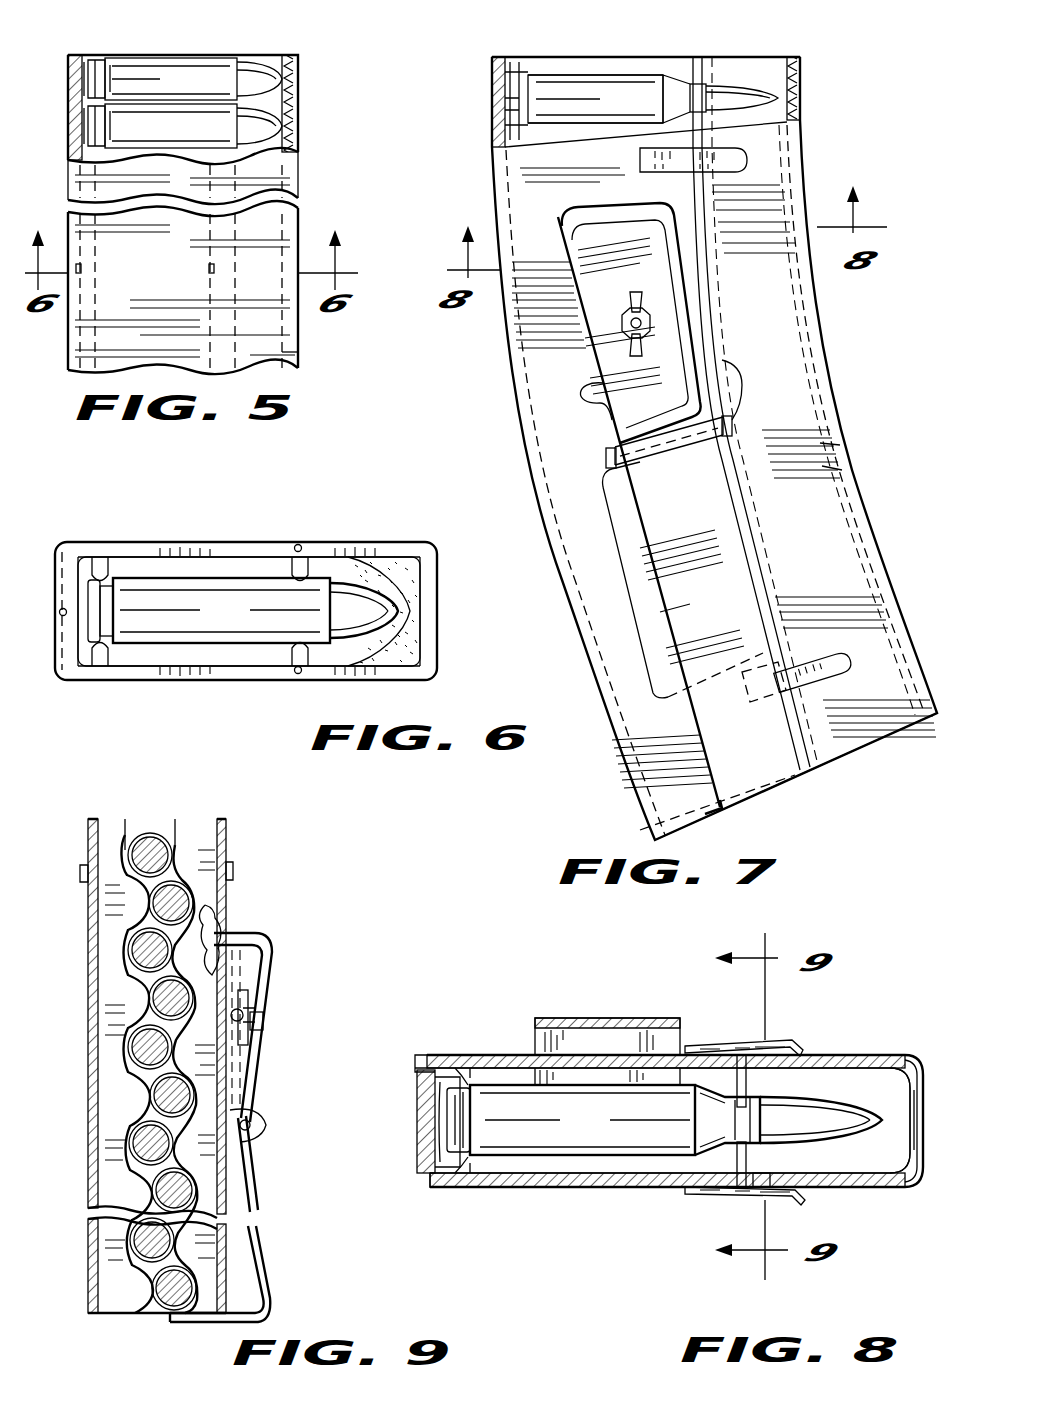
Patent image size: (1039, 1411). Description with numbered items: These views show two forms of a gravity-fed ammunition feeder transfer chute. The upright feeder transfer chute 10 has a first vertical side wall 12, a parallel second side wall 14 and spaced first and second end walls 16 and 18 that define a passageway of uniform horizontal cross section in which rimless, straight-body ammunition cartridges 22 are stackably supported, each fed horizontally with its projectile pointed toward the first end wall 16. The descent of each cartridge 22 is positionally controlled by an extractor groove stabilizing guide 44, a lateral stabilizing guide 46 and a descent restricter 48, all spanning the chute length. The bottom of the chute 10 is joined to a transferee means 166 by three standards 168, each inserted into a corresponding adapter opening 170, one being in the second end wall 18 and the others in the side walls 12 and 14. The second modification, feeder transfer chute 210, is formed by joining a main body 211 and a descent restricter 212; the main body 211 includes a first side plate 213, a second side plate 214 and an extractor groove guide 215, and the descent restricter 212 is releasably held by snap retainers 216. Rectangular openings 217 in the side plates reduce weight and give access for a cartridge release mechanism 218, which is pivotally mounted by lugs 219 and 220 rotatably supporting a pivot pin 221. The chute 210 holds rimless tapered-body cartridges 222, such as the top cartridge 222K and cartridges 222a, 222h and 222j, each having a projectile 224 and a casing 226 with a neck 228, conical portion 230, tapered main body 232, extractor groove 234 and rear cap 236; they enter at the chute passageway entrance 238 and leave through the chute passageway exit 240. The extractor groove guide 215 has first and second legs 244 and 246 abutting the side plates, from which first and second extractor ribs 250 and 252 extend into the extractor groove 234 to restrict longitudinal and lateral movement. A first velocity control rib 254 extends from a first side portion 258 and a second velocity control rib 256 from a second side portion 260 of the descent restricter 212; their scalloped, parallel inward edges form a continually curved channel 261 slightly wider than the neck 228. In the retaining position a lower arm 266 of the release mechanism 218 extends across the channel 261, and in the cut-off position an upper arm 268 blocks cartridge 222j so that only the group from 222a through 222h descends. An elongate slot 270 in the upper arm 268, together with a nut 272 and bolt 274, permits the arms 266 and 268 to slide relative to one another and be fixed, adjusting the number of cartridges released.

In FIG. 5, the feeder transfer chute 10 is at (306, 127).
In FIG. 6, the feeder transfer chute 10 is at (102, 520).
In FIG. 6, the first vertical side wall 12 is at (222, 552).
In FIG. 6, the second side wall 14 is at (156, 670).
In FIG. 5, the first end wall 16 is at (293, 90).
In FIG. 6, the first end wall 16 is at (422, 638).
In FIG. 5, the second end wall 18 is at (74, 84).
In FIG. 6, the second end wall 18 is at (65, 548).
In FIG. 5, the ammunition cartridges 22 is at (193, 82).
In FIG. 6, the ammunition cartridges 22 is at (215, 610).
In FIG. 6, the extractor groove stabilizing guide 44 is at (105, 570).
In FIG. 6, the lateral stabilizing guide 46 is at (305, 660).
In FIG. 6, the descent restricter 48 is at (405, 579).
In FIG. 5, the transferee means 166 is at (282, 352).
In FIG. 5, the standards 168 is at (210, 265).
In FIG. 6, the adapter openings 170 is at (60, 620).
In FIG. 7, the feeder transfer chute 210 is at (822, 96).
In FIG. 9, the feeder transfer chute 210 is at (78, 1070).
In FIG. 8, the feeder transfer chute 210 is at (812, 1024).
In FIG. 7, the main body 211 is at (523, 192).
In FIG. 7, the descent restricter 212 is at (800, 343).
In FIG. 8, the descent restricter 212 is at (927, 1146).
In FIG. 7, the first side plate 213 is at (622, 622).
In FIG. 8, the first side plate 213 is at (503, 1053).
In FIG. 8, the second side plate 214 is at (582, 1188).
In FIG. 8, the extractor groove guide 215 is at (420, 1110).
In FIG. 7, the snap retainers 216 is at (747, 163).
In FIG. 7, the rectangular openings 217 is at (590, 385).
In FIG. 7, the cartridge release mechanism 218 is at (745, 618).
In FIG. 9, the cartridge release mechanism 218 is at (278, 1213).
In FIG. 7, the lug 219 is at (727, 428).
In FIG. 7, the lug 220 is at (615, 455).
In FIG. 9, the lug 220 is at (250, 1118).
In FIG. 7, the pivot pin 221 is at (608, 462).
In FIG. 9, the pivot pin 221 is at (258, 1130).
In FIG. 8, the cartridges 222 is at (765, 1115).
In FIG. 7, the top cartridge 222K is at (617, 97).
In FIG. 9, the top cartridge 222K is at (160, 855).
In FIG. 9, the cartridge 222j is at (195, 893).
In FIG. 9, the cartridge 222h is at (148, 950).
In FIG. 9, the bottom cartridge 222a is at (150, 1312).
In FIG. 7, the projectile 224 is at (790, 100).
In FIG. 7, the casing 226 is at (620, 40).
In FIG. 7, the neck 228 is at (698, 90).
In FIG. 8, the neck 228 is at (762, 1113).
In FIG. 7, the conical portion 230 is at (674, 80).
In FIG. 7, the tapered main body 232 is at (640, 88).
In FIG. 7, the extractor groove 234 is at (508, 88).
In FIG. 8, the extractor groove 234 is at (470, 1116).
In FIG. 7, the rear cap 236 is at (505, 125).
In FIG. 7, the chute passageway entrance 238 is at (542, 56).
In FIG. 9, the chute passageway entrance 238 is at (172, 830).
In FIG. 7, the chute passageway exit 240 is at (868, 748).
In FIG. 8, the first leg 244 is at (415, 1070).
In FIG. 8, the second leg 246 is at (450, 1188).
In FIG. 8, the first extractor rib 250 is at (466, 1064).
In FIG. 8, the second extractor rib 252 is at (473, 1186).
In FIG. 9, the first velocity control rib 254 is at (205, 838).
In FIG. 8, the first velocity control rib 254 is at (747, 1080).
In FIG. 9, the second velocity control rib 256 is at (112, 838).
In FIG. 8, the second velocity control rib 256 is at (747, 1162).
In FIG. 8, the first side portion 258 is at (865, 1055).
In FIG. 8, the second side portion 260 is at (867, 1188).
In FIG. 9, the continually curved channel 261 is at (220, 960).
In FIG. 7, the lower arm 266 is at (690, 660).
In FIG. 9, the lower arm 266 is at (210, 1322).
In FIG. 7, the upper arm 268 is at (603, 240).
In FIG. 9, the upper arm 268 is at (262, 933).
In FIG. 7, the elongate slot 270 is at (642, 293).
In FIG. 7, the nut 272 is at (650, 320).
In FIG. 9, the nut 272 is at (263, 1022).
In FIG. 7, the bolt 274 is at (652, 323).
In FIG. 9, the bolt 274 is at (243, 1010).